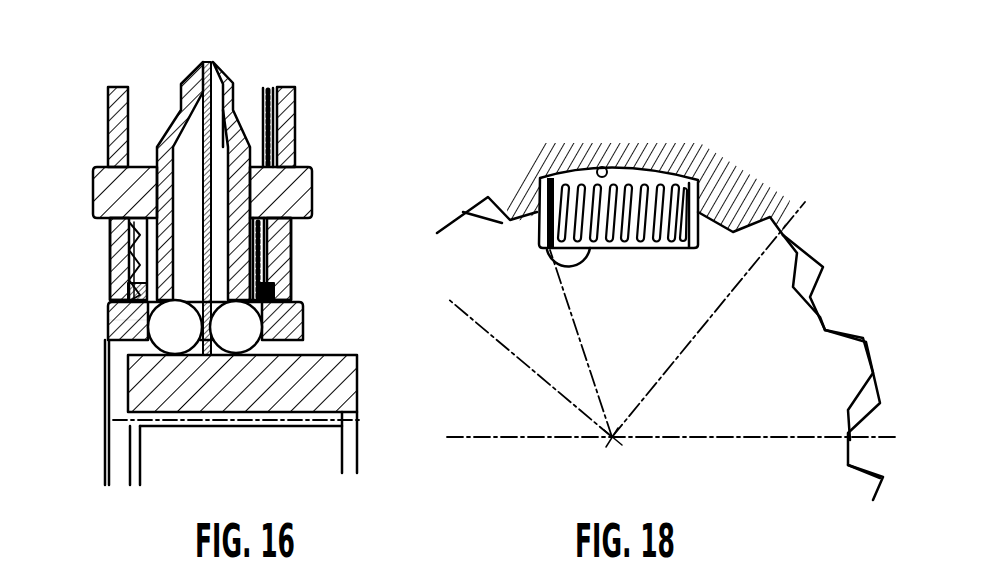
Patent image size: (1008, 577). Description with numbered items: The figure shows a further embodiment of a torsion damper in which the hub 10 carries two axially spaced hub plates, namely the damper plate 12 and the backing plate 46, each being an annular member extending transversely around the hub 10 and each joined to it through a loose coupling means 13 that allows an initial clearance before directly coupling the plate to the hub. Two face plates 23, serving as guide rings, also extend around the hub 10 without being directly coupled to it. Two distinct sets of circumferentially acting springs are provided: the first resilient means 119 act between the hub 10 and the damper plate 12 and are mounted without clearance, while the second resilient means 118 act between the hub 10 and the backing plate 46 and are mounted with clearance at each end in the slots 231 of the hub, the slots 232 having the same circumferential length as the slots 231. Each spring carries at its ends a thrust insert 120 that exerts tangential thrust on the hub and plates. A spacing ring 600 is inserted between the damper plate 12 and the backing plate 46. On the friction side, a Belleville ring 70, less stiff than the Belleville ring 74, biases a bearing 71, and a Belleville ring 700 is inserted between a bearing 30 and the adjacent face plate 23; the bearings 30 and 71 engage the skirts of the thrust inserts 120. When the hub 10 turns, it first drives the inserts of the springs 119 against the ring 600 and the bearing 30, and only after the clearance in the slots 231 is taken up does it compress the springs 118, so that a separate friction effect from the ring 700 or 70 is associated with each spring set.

In FIG. 16, the hub 10 is at (357, 386).
In FIG. 18, the hub 10 is at (768, 420).
In FIG. 16, the damper plate 12 is at (230, 83).
In FIG. 18, the damper plate 12 is at (817, 170).
In FIG. 18, the loose coupling means 13 is at (832, 311).
In FIG. 16, the face plate 23 is at (110, 118).
In FIG. 16, the bearing 30 is at (304, 325).
In FIG. 16, the backing plate 46 is at (181, 94).
In FIG. 16, the Belleville ring 70 is at (128, 291).
In FIG. 16, the bearing 71 is at (117, 323).
In FIG. 16, the Belleville ring 74 is at (127, 238).
In FIG. 16, the second resilient means 118 is at (176, 335).
In FIG. 16, the first resilient means 119 is at (238, 336).
In FIG. 18, the first resilient means 119 is at (549, 250).
In FIG. 18, the thrust insert 120 is at (540, 177).
In FIG. 18, the slot 231 is at (643, 250).
In FIG. 18, the slot 232 is at (603, 167).
In FIG. 16, the spacing ring 600 is at (224, 146).
In FIG. 16, the Belleville ring 700 is at (275, 292).